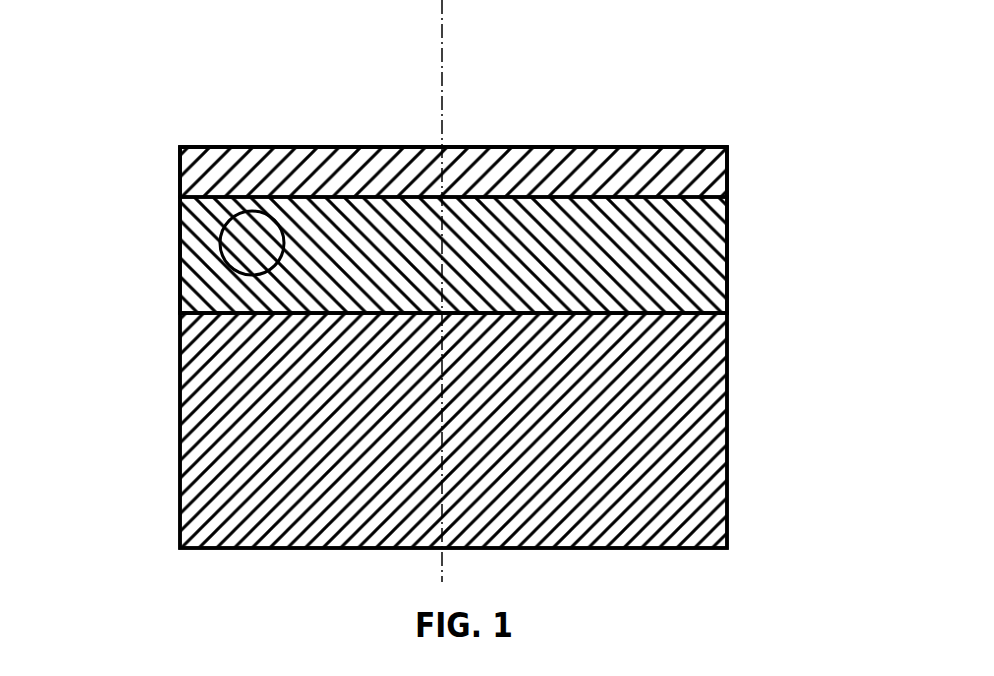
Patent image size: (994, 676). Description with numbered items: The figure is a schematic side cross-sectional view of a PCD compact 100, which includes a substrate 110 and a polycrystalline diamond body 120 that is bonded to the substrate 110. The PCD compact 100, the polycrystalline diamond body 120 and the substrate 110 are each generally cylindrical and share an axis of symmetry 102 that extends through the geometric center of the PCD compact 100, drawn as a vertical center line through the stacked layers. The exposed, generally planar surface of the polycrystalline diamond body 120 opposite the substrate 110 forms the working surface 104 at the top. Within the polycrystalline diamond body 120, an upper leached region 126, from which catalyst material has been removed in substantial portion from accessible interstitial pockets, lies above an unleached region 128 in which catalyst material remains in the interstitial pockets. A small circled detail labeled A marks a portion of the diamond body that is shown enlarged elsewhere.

The PCD compact 100 is at (753, 97).
The axis of symmetry 102 is at (443, 70).
The working surface 104 is at (345, 145).
The substrate 110 is at (727, 424).
The polycrystalline diamond body 120 is at (727, 215).
The leached region 126 is at (180, 170).
The unleached region 128 is at (180, 300).
The detail region A is at (245, 210).